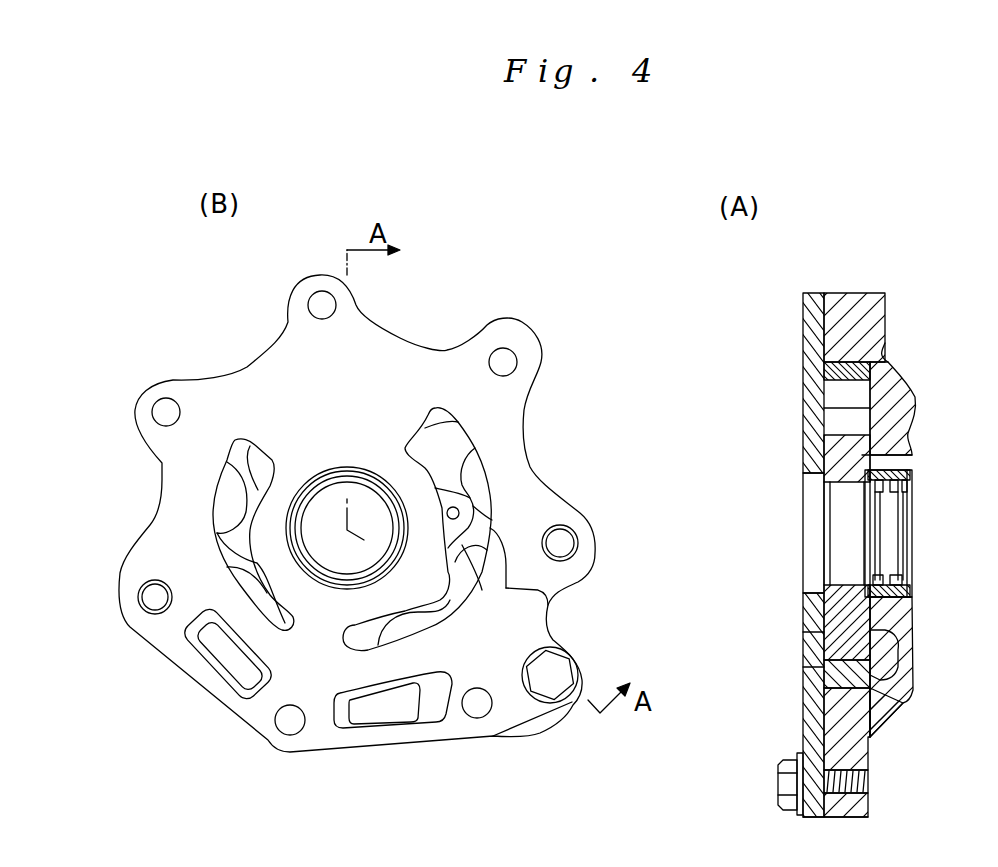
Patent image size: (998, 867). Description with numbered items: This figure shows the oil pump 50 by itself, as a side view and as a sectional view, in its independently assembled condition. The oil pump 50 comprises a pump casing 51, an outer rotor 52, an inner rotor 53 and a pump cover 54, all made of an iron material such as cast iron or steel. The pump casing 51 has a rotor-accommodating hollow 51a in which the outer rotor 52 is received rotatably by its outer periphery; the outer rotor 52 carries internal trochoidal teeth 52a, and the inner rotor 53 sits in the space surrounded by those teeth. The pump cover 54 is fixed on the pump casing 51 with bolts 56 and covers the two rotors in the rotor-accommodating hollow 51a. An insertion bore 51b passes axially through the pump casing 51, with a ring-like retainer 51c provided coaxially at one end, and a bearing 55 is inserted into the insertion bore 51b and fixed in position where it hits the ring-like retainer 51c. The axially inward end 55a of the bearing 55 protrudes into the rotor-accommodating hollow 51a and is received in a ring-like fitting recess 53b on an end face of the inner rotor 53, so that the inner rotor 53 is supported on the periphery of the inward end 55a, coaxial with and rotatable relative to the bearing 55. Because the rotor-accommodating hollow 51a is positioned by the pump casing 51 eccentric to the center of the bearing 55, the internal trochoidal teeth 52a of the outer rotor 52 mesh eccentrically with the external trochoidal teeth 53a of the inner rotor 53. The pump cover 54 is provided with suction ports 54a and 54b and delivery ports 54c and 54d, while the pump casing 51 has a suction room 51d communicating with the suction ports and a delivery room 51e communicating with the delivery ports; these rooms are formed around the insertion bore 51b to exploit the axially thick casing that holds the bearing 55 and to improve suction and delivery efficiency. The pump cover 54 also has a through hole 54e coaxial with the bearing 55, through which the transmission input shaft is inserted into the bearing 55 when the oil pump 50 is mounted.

The oil pump 50 is at (539, 322).
The pump casing 51 is at (903, 390).
The rotor-accommodating hollow 51a is at (884, 360).
The insertion bore 51b is at (893, 484).
The ring-like retainer 51c is at (913, 590).
The suction room 51d is at (402, 707).
The delivery room 51e is at (213, 650).
The outer rotor 52 is at (862, 690).
The internal trochoidal teeth 52a is at (537, 490).
The inner rotor 53 is at (867, 620).
The external trochoidal teeth 53a is at (483, 493).
The ring-like fitting recess 53b is at (887, 493).
The pump cover 54 is at (517, 456).
The suction port 54a is at (551, 604).
The suction port 54b is at (388, 713).
The delivery port 54c is at (215, 492).
The delivery port 54d is at (228, 666).
The through hole 54e is at (803, 480).
The bearing 55 is at (897, 578).
The axially inward end of bearing 55a is at (897, 458).
The bolts 56 is at (788, 790).